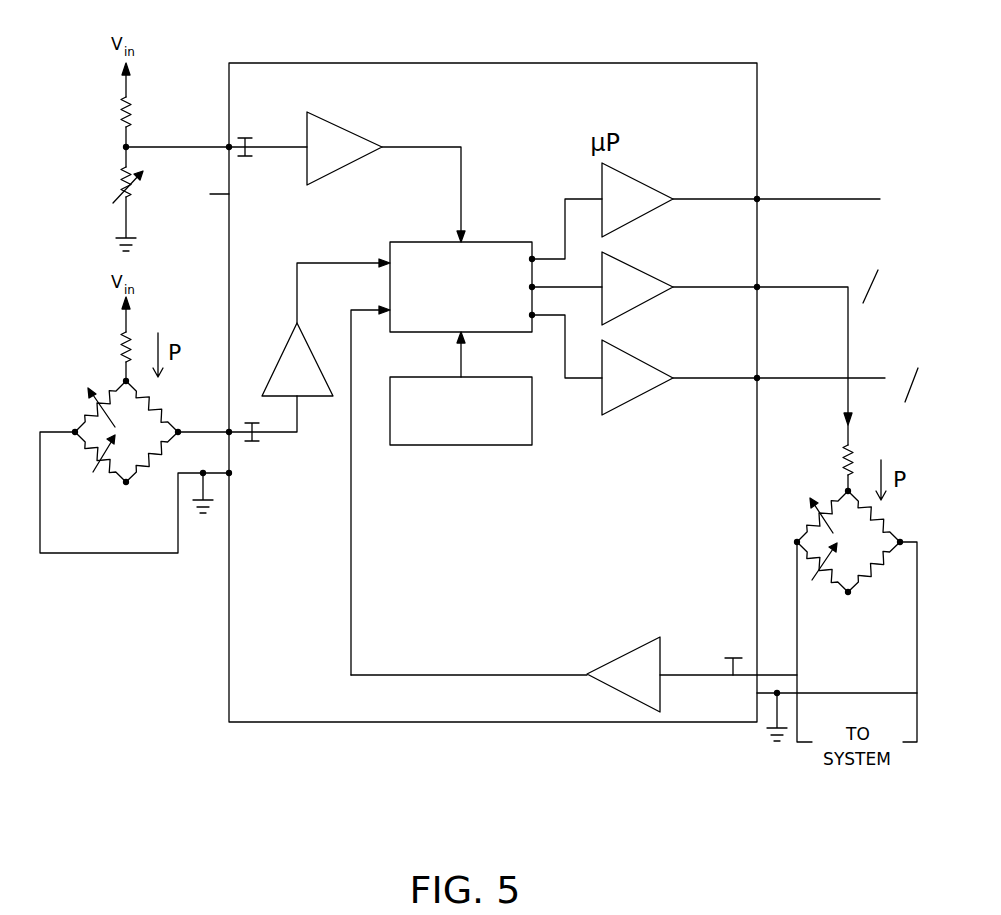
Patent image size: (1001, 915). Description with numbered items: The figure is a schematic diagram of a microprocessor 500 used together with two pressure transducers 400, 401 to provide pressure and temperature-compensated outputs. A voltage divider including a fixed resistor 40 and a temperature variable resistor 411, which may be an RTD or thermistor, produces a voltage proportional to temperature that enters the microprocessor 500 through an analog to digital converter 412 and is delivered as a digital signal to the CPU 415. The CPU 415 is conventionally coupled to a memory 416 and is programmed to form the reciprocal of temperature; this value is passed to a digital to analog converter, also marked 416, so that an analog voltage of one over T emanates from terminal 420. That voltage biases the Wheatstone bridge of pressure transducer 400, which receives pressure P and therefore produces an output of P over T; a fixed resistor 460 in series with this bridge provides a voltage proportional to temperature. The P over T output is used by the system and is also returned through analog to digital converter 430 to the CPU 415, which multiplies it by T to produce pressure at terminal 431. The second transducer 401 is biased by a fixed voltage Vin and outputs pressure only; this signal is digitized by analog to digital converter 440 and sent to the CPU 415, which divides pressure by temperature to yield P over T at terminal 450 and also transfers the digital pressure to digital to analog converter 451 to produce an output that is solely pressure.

The resistor 40 is at (132, 108).
The temperature variable resistor 411 is at (120, 183).
The analog to digital converter 412 is at (336, 122).
The CPU 415 is at (498, 242).
The analog to digital converter 440 is at (284, 342).
The pressure transducer 401 is at (145, 432).
The memory 416 is at (436, 447).
The digital to analog converter 451 is at (635, 187).
The output terminal 431 is at (758, 196).
The output terminal 420 is at (752, 289).
The output terminal 450 is at (752, 380).
The fixed resistor 460 is at (845, 458).
The pressure transducer 400 is at (869, 559).
The analog to digital converter 430 is at (628, 648).
The microprocessor 500 is at (572, 580).